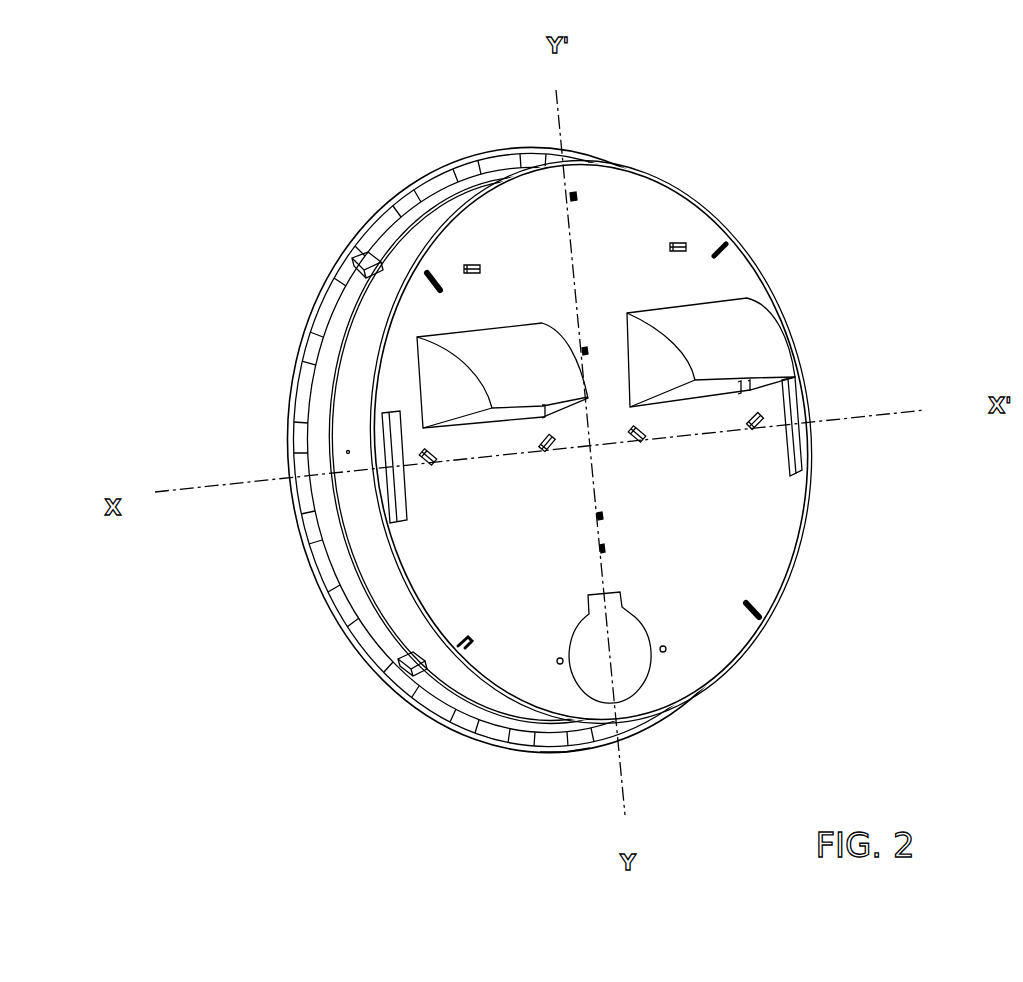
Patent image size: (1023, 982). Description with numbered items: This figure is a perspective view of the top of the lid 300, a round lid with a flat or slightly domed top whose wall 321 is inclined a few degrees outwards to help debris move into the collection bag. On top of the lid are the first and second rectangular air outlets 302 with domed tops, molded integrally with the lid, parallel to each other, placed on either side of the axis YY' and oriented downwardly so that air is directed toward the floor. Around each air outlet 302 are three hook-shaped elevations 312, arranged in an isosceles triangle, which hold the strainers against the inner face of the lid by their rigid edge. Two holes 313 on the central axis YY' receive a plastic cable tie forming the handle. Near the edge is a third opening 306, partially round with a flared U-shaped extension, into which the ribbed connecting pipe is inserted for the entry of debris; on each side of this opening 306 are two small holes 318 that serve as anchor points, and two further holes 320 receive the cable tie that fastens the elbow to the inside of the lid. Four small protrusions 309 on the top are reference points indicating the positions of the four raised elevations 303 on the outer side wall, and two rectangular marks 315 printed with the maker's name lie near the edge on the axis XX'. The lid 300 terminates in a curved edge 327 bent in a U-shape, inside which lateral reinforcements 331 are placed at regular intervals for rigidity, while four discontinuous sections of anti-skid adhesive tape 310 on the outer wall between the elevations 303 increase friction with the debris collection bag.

The lid 300 is at (612, 247).
The air outlets 302 is at (497, 365).
The elevations 303 is at (366, 266).
The third opening 306 is at (610, 592).
The protrusions 309 is at (418, 266).
The anti-skid adhesive tape 310 is at (405, 230).
The elevations 312 is at (475, 253).
The holes 313 is at (576, 190).
The rectangular marks 315 is at (348, 452).
The small holes 318 is at (559, 662).
The holes 320 is at (597, 521).
The wall 321 is at (382, 477).
The curved edge 327 is at (300, 542).
The lateral reinforcements 331 is at (563, 752).